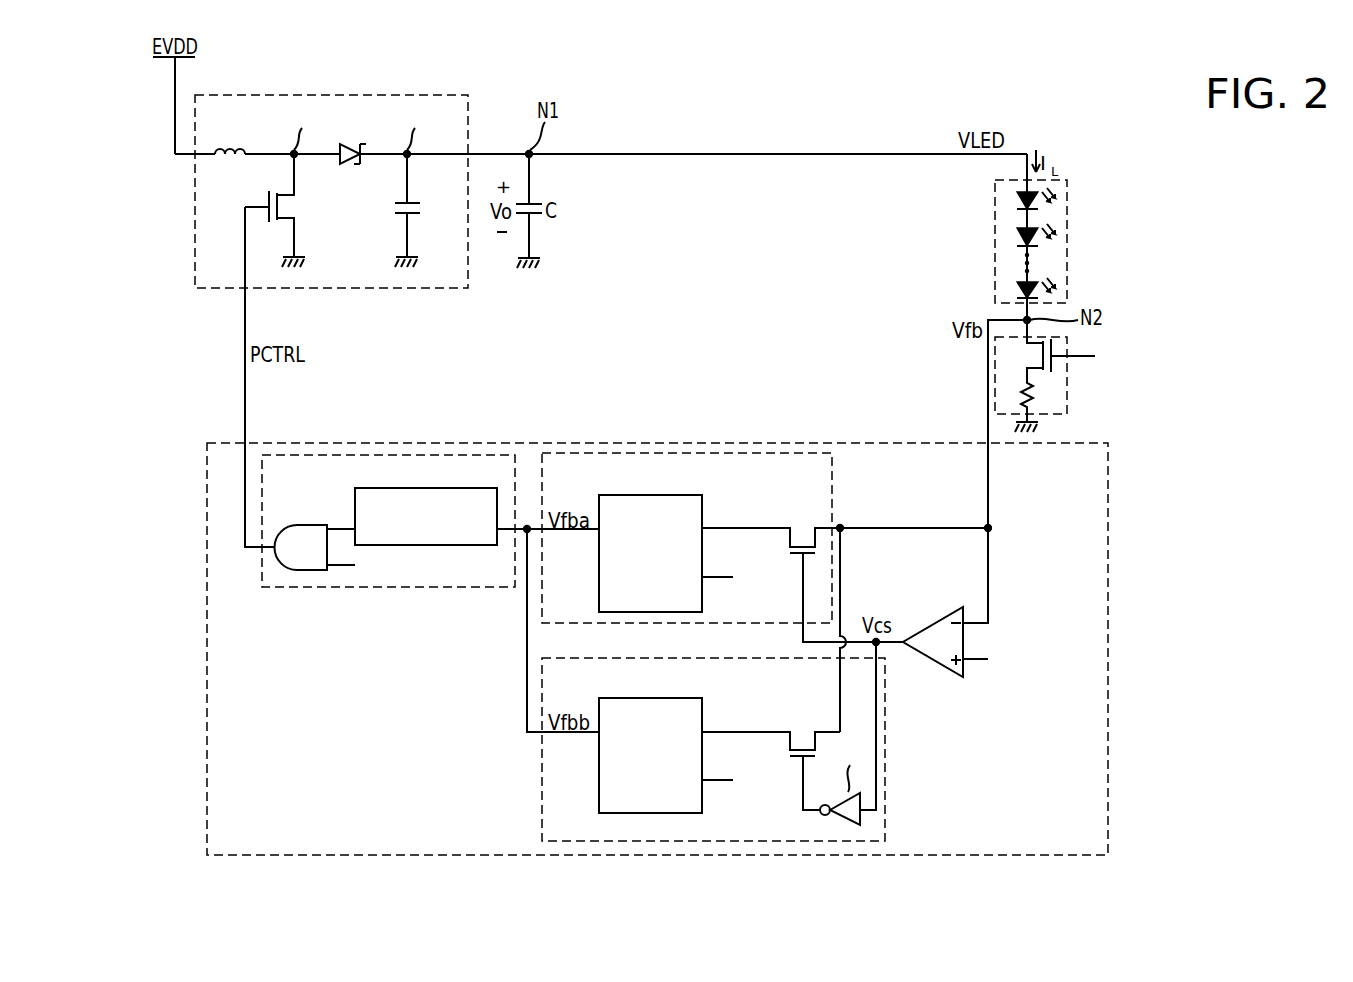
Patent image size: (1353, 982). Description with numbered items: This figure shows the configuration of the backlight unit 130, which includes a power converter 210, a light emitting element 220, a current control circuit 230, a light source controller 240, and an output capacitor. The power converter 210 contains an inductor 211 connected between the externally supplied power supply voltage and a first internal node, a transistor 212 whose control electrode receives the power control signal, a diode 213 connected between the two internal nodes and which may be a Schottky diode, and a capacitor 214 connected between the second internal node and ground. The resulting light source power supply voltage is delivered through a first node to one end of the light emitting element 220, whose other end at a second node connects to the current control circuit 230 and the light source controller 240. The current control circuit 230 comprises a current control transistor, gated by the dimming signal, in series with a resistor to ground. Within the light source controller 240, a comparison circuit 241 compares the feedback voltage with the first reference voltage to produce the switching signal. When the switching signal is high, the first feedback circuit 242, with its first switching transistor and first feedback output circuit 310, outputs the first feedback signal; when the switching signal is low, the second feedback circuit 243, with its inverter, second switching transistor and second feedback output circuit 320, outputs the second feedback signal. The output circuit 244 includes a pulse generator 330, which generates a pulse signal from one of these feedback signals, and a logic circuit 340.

The backlight unit 130 is at (772, 82).
The power converter 210 is at (405, 95).
The inductor 211 is at (230, 137).
The transistor 212 is at (287, 210).
The diode 213 is at (353, 142).
The capacitor 214 is at (426, 210).
The light emitting element 220 is at (1067, 235).
The current control circuit 230 is at (1067, 394).
The light source controller 240 is at (1108, 612).
The comparison circuit 241 is at (935, 622).
The first feedback circuit 242 is at (833, 473).
The second feedback circuit 243 is at (885, 782).
The output circuit 244 is at (458, 588).
The first feedback output circuit 310 is at (650, 495).
The second feedback output circuit 320 is at (650, 698).
The pulse generator 330 is at (412, 488).
The logic circuit 340 is at (302, 525).